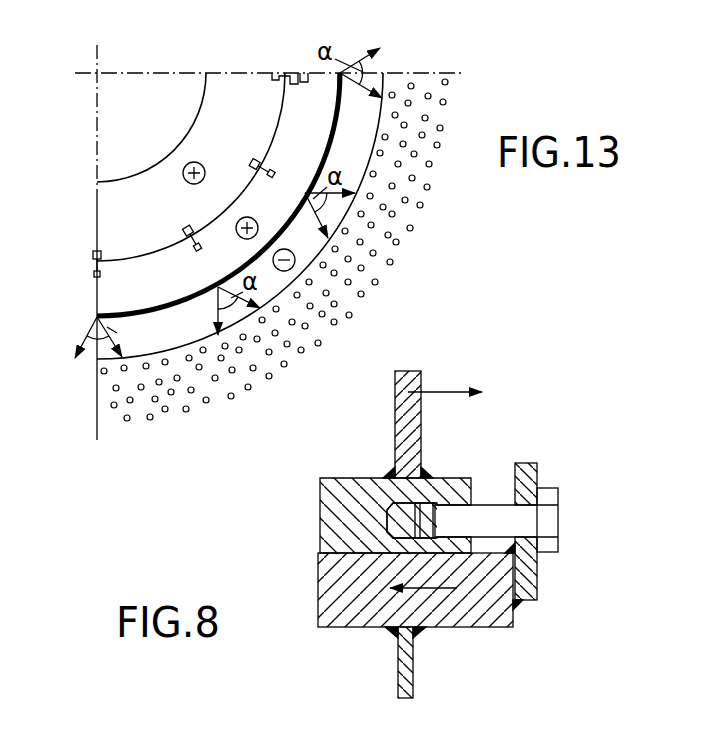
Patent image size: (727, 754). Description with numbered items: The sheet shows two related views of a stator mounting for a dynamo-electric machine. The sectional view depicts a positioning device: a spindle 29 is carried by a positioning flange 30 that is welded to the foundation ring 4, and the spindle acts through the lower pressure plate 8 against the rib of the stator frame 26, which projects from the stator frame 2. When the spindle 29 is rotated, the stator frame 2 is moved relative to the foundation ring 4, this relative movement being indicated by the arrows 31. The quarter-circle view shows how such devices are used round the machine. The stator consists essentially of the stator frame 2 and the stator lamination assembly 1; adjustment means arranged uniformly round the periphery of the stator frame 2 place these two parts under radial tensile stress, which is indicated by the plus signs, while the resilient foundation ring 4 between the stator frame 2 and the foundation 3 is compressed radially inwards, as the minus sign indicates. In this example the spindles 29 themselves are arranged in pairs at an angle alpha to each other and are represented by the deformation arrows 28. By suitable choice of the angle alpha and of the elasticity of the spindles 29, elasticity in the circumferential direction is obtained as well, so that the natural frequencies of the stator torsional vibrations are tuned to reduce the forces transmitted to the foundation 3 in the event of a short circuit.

In FIG. 13, the stator lamination assembly 1 is at (125, 210).
In FIG. 13, the stator frame 2 is at (317, 103).
In FIG. 8, the stator frame 2 is at (438, 490).
In FIG. 13, the foundation 3 is at (387, 173).
In FIG. 8, the foundation ring 4 is at (342, 598).
In FIG. 8, the lower pressure plate 8 is at (340, 512).
In FIG. 8, the rib of the stator frame 26 is at (410, 389).
In FIG. 13, the deformation arrows 28 is at (82, 343).
In FIG. 8, the spindle 29 is at (487, 526).
In FIG. 8, the positioning flange 30 is at (520, 589).
In FIG. 8, the arrows 31 is at (425, 588).